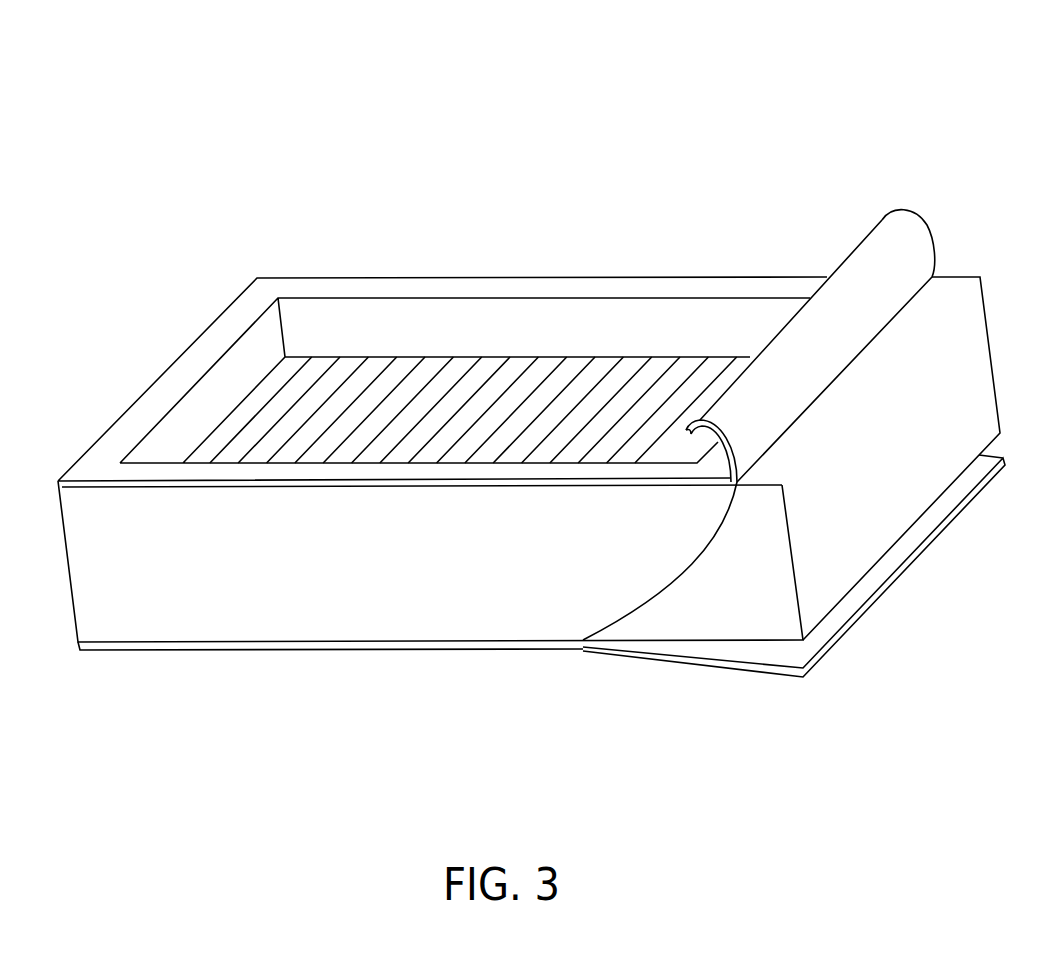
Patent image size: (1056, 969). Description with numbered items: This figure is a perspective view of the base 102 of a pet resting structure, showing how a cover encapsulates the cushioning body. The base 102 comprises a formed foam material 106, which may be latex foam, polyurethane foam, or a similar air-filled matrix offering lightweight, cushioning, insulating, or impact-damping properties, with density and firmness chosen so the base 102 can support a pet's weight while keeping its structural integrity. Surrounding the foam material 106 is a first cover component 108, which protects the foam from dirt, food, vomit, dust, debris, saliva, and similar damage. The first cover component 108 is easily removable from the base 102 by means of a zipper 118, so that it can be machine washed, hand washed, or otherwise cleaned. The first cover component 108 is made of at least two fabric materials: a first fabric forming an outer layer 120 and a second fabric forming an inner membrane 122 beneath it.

The base 102 is at (555, 403).
The foam material 106 is at (952, 292).
The first cover component 108 is at (783, 693).
The zipper 118 is at (583, 668).
The outer layer 120 is at (392, 626).
The inner membrane 122 is at (912, 238).